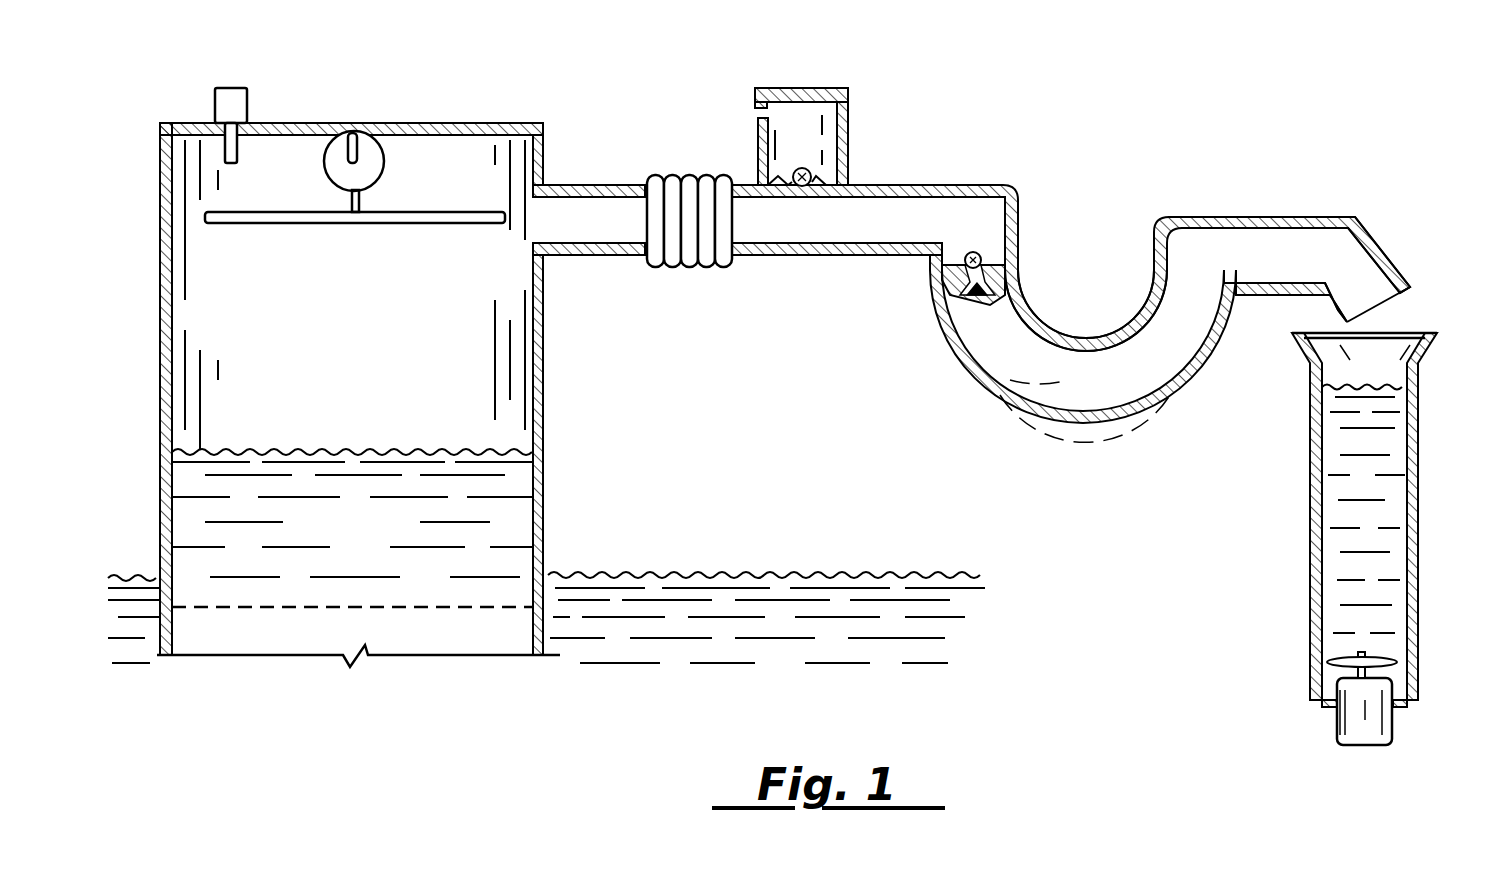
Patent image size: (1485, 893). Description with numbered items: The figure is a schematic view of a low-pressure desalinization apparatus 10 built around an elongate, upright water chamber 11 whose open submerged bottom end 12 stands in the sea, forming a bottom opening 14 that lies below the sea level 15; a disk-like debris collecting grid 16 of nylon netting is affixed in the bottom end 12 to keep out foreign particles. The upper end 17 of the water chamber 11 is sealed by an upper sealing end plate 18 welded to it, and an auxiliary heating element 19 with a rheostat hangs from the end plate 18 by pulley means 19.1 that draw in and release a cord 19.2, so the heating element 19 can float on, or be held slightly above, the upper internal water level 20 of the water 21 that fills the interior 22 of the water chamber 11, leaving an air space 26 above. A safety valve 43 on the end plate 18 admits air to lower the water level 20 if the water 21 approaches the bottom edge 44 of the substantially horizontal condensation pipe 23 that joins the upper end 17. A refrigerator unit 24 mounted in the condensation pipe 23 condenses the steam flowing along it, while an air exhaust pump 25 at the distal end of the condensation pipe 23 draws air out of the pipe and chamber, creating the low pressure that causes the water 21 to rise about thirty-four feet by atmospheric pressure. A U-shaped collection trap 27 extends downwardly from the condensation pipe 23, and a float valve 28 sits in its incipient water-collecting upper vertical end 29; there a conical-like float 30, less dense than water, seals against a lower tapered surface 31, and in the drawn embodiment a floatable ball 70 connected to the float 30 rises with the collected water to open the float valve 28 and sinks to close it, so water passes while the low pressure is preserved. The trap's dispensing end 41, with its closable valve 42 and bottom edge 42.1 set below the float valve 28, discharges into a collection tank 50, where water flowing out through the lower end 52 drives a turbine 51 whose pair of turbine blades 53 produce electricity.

The desalinization apparatus 10 is at (1081, 112).
The water chamber 11 is at (372, 352).
The submerged bottom end 12 is at (160, 628).
The bottom opening 14 is at (337, 672).
The sea level 15 is at (775, 574).
The debris collecting grid 16 is at (445, 607).
The upper end 17 is at (160, 143).
The upper sealing end plate 18 is at (477, 123).
The auxiliary heating element 19 is at (430, 212).
The pulley means 19.1 is at (383, 148).
The cord 19.2 is at (350, 200).
The upper internal water level 20 is at (218, 452).
The water 21 is at (372, 535).
The interior 22 is at (545, 525).
The condensation pipe 23 is at (748, 180).
The refrigerator unit 24 is at (670, 176).
The air exhaust pump 25 is at (798, 88).
The air space 26 is at (369, 331).
The U-shaped collection trap 27 is at (975, 380).
The float valve 28 is at (926, 284).
The incipient water-collecting upper vertical end 29 is at (1018, 205).
The conical-like float 30 is at (1040, 338).
The lower tapered surface 31 is at (1030, 318).
The dispensing end 41 is at (1360, 222).
The closable valve 42 is at (1385, 305).
The bottom edge of dispensing end 42.1 is at (1265, 297).
The safety valve 43 is at (228, 88).
The bottom edge of condensation pipe 44 is at (598, 258).
The collection tank 50 is at (1418, 505).
The turbine 51 is at (1355, 745).
The lower end of tank 52 is at (1397, 710).
The turbine blades 53 is at (1380, 660).
The ball 70 is at (973, 252).